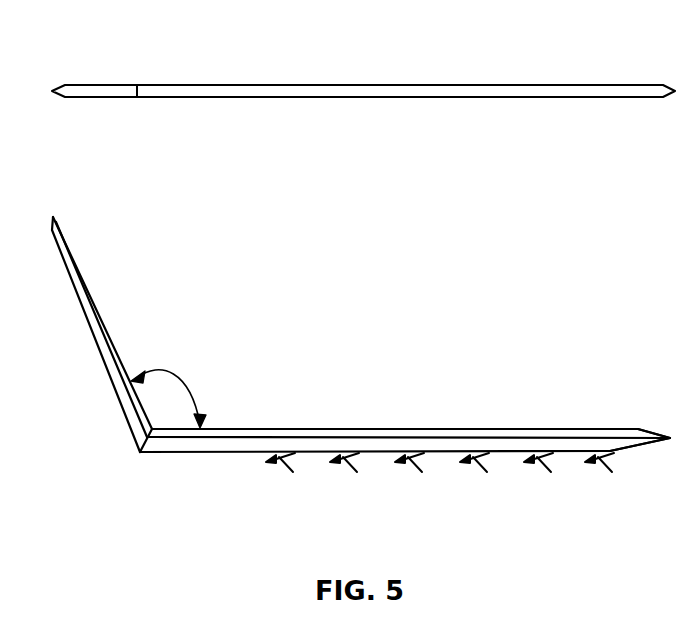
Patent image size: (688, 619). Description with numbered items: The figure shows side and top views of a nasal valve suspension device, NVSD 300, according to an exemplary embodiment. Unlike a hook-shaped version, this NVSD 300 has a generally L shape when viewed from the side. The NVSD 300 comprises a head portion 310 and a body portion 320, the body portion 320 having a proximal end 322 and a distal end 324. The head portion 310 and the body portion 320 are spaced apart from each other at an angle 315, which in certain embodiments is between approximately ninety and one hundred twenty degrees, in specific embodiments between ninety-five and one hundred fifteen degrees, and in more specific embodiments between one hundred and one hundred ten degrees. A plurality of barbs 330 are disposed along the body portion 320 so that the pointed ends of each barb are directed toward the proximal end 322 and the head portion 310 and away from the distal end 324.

The NVSD 300 is at (363, 272).
The head portion 310 is at (78, 85).
The angle 315 is at (178, 372).
The body portion 320 is at (497, 85).
The proximal end 322 is at (146, 453).
The distal end 324 is at (648, 428).
The barbs 330 is at (603, 465).